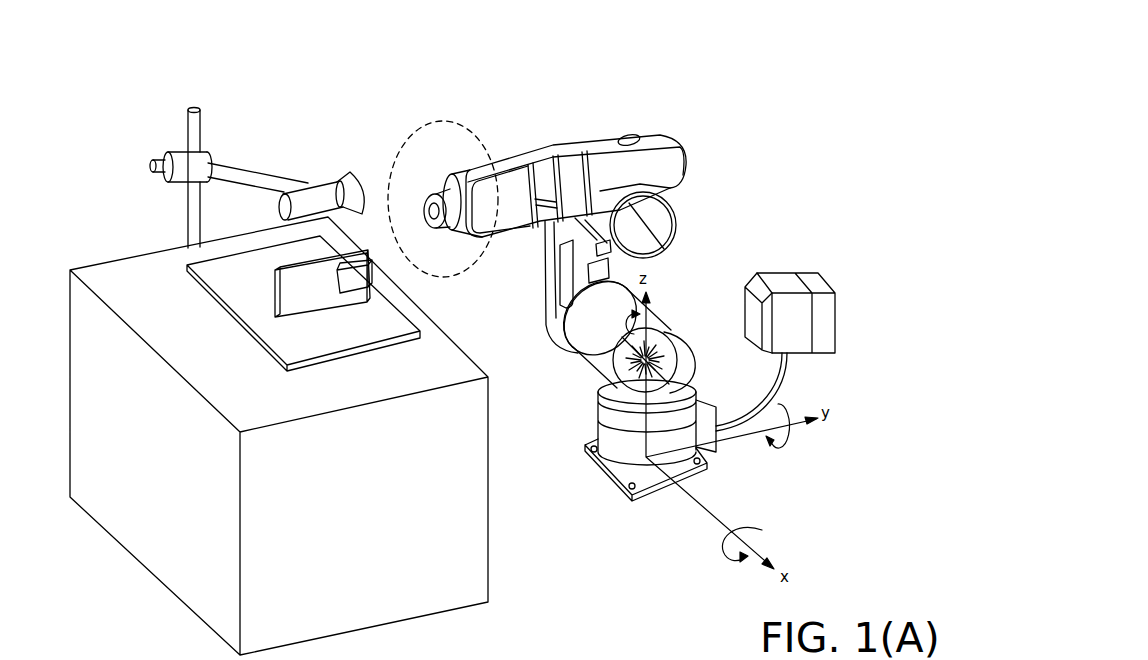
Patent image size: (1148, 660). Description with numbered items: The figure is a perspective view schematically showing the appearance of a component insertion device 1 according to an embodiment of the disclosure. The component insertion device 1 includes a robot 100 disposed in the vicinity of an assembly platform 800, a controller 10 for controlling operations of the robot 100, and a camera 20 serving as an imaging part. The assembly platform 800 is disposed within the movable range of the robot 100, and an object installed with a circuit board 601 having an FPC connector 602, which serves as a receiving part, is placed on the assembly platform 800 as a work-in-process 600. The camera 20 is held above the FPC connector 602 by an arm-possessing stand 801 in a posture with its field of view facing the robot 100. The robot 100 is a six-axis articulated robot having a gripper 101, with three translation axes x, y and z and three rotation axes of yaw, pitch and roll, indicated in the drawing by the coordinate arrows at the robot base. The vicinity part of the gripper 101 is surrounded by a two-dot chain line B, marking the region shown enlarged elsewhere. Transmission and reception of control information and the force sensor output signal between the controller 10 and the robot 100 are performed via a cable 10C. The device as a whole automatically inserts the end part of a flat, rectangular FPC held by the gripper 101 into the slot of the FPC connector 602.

The component insertion device 1 is at (598, 92).
The controller 10 is at (782, 272).
The cable 10C is at (758, 393).
The camera 20 is at (322, 195).
The robot 100 is at (554, 282).
The gripper 101 is at (426, 186).
The work-in-process 600 is at (208, 274).
The circuit board 601 is at (325, 297).
The FPC connector 602 is at (372, 280).
The assembly platform 800 is at (100, 275).
The arm-possessing stand 801 is at (202, 135).
The two-dot chain line B is at (458, 123).